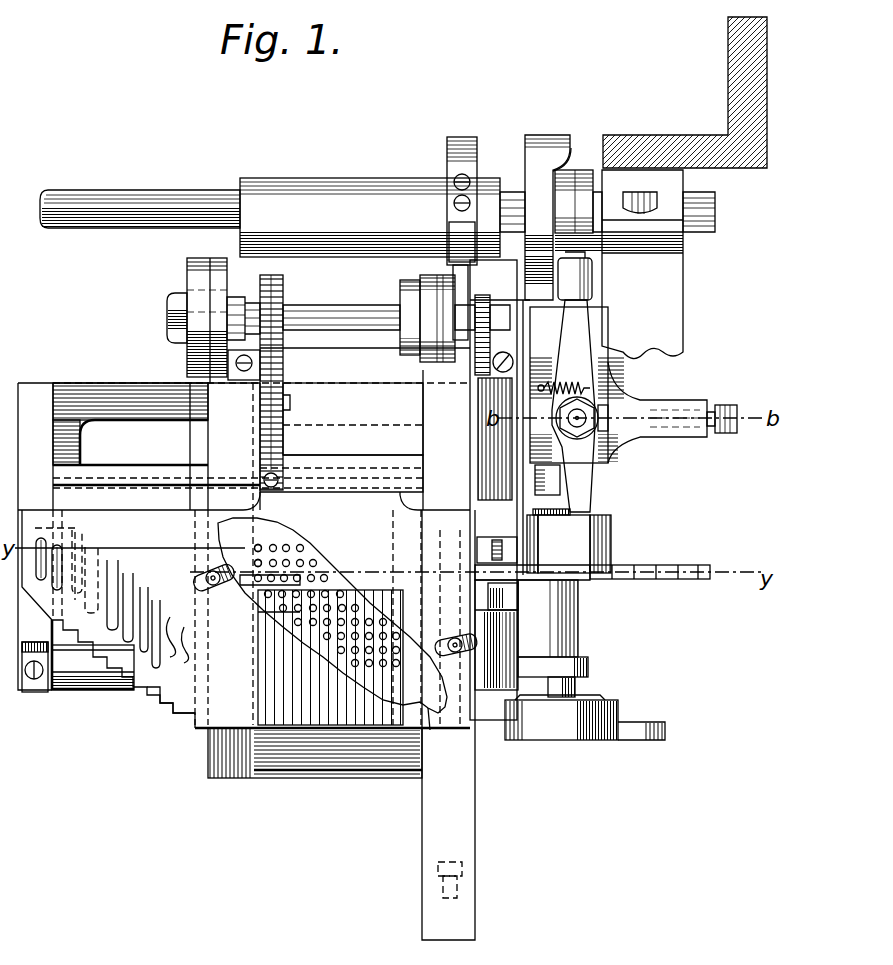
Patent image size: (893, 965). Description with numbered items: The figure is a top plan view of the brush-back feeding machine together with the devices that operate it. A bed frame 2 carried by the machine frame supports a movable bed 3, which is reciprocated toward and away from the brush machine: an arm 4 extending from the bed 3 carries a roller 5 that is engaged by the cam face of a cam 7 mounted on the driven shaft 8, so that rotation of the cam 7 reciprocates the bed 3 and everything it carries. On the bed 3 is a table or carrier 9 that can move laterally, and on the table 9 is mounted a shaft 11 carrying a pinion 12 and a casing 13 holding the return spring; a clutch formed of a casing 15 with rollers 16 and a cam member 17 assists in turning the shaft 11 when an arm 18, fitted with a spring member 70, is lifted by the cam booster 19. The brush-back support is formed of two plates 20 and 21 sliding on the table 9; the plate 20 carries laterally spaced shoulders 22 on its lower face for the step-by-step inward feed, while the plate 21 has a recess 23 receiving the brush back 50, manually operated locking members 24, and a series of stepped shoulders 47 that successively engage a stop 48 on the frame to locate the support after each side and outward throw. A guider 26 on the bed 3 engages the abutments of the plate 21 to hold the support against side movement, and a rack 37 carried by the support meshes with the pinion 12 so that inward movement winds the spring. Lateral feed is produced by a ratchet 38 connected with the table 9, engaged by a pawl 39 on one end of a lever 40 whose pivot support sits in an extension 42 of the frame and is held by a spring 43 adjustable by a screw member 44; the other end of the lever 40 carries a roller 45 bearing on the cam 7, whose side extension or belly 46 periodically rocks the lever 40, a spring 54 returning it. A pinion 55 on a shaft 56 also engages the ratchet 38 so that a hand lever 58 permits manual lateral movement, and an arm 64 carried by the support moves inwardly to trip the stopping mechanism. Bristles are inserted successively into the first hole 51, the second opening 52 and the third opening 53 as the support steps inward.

The bed frame 2 is at (88, 396).
The movable bed 3 is at (82, 665).
The arm 4 is at (513, 285).
The roller 5 is at (528, 255).
The cam 7 is at (543, 136).
The shaft 8 is at (165, 207).
The table or carrier 9 is at (353, 419).
The shaft 11 is at (386, 316).
The pinion 12 is at (263, 288).
The casing 13 is at (196, 278).
The clutch casing 15 is at (411, 332).
The rollers 16 is at (433, 366).
The cam member 17 is at (478, 356).
The arm 18 is at (446, 225).
The cam booster 19 is at (370, 217).
The plate 20 is at (392, 456).
The plate 21 is at (332, 624).
The engaging shoulders 22 is at (421, 736).
The recess 23 is at (327, 556).
The locking members 24 is at (206, 576).
The guider 26 is at (45, 545).
The rack 37 is at (283, 403).
The ratchet 38 is at (673, 581).
The pawl 39 is at (569, 541).
The lever 40 is at (582, 437).
The frame extension 42 is at (622, 382).
The spring 43 is at (633, 452).
The screw member 44 is at (727, 405).
The roller 45 is at (592, 277).
The side cam extension or belly 46 is at (558, 150).
The stepped shoulders 47 is at (156, 698).
The stop 48 is at (28, 690).
The brush back 50 is at (250, 590).
The first hole 51 is at (259, 544).
The second opening 52 is at (258, 560).
The third opening 53 is at (262, 618).
The spring 54 is at (557, 383).
The pinion or gear 55 is at (600, 549).
The shaft 56 is at (556, 632).
The hand lever 58 is at (633, 731).
The arm 64 is at (448, 725).
The spring member 70 is at (453, 160).